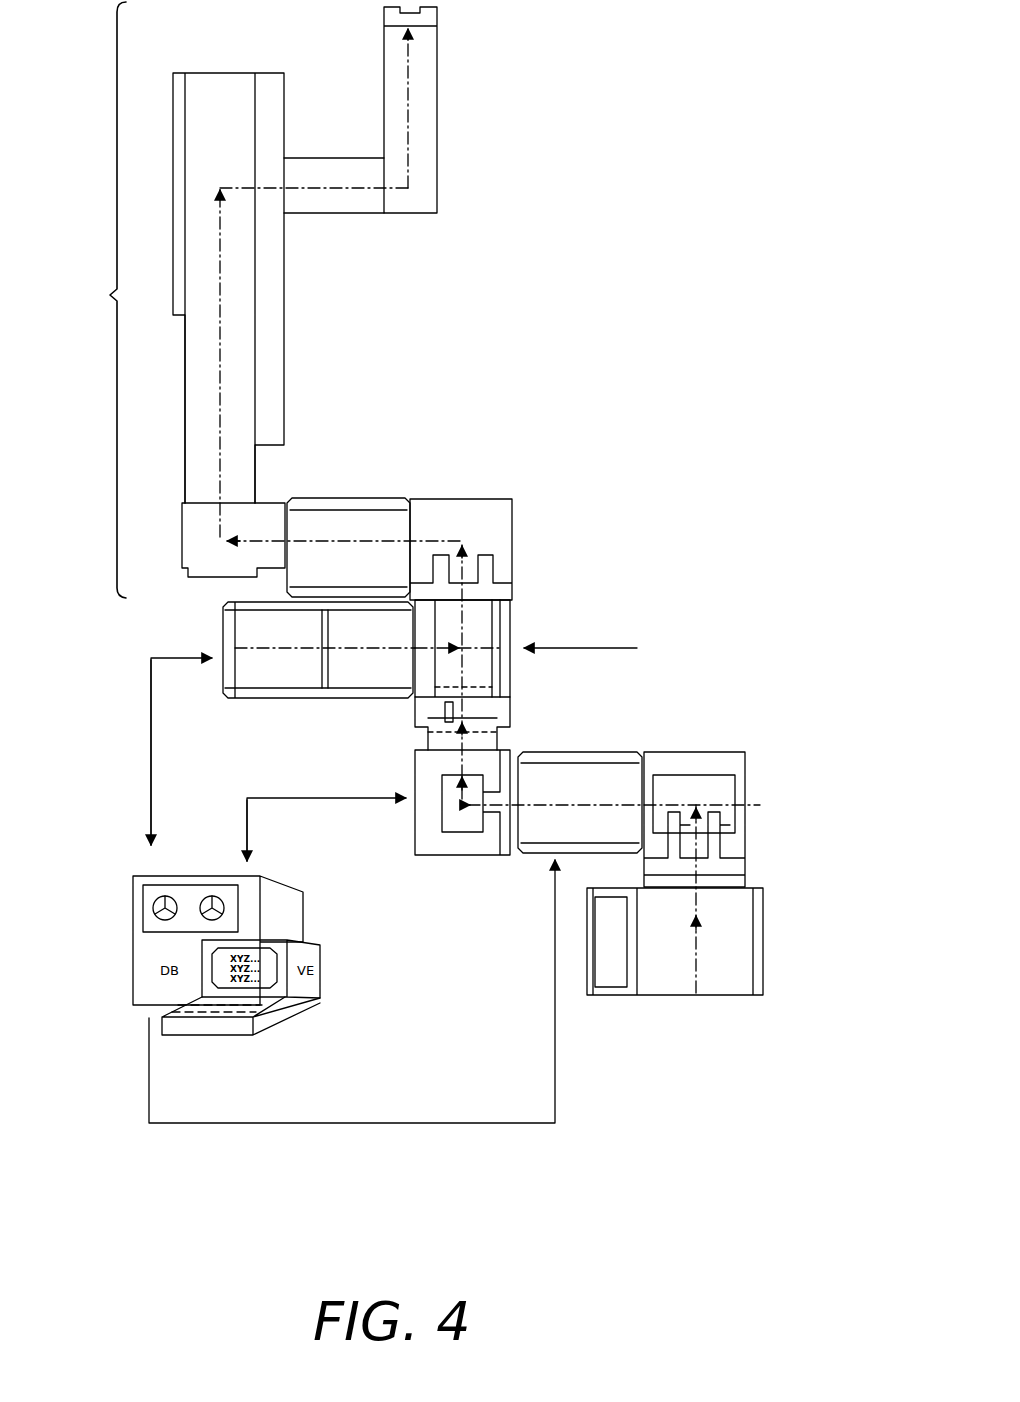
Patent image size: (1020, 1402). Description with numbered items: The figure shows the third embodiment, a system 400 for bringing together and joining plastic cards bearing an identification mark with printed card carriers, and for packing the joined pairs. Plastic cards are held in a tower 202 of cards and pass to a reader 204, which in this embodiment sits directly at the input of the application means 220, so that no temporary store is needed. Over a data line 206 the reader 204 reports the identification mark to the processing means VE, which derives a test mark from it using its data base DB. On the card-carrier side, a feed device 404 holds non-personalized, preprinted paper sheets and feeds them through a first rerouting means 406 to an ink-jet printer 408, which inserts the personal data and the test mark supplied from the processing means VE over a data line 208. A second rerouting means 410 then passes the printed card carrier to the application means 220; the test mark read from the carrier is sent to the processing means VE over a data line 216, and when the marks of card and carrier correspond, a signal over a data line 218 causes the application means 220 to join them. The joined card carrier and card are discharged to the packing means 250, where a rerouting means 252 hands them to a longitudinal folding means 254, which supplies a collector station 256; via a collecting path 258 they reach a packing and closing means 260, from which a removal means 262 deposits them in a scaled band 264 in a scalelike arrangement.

The packing means 250 is at (328, 402).
The packing and closing means 260 is at (228, 100).
The removal means 262 is at (348, 200).
The scaled band 264 is at (420, 172).
The collecting path 258 is at (190, 385).
The collector station 256 is at (230, 555).
The longitudinal folding means 254 is at (355, 535).
The rerouting means 252 is at (465, 525).
The system 400 is at (722, 583).
The data line 218 is at (578, 648).
The application means 220 is at (500, 675).
The second rerouting means 410 is at (447, 845).
The ink-jet printer 408 is at (577, 783).
The first rerouting means 406 is at (725, 767).
The feed device 404 is at (733, 953).
The tower of cards 202 is at (296, 668).
The reader 204 is at (386, 672).
The data line 206 is at (151, 735).
The data line 216 is at (305, 798).
The data line 208 is at (549, 1020).